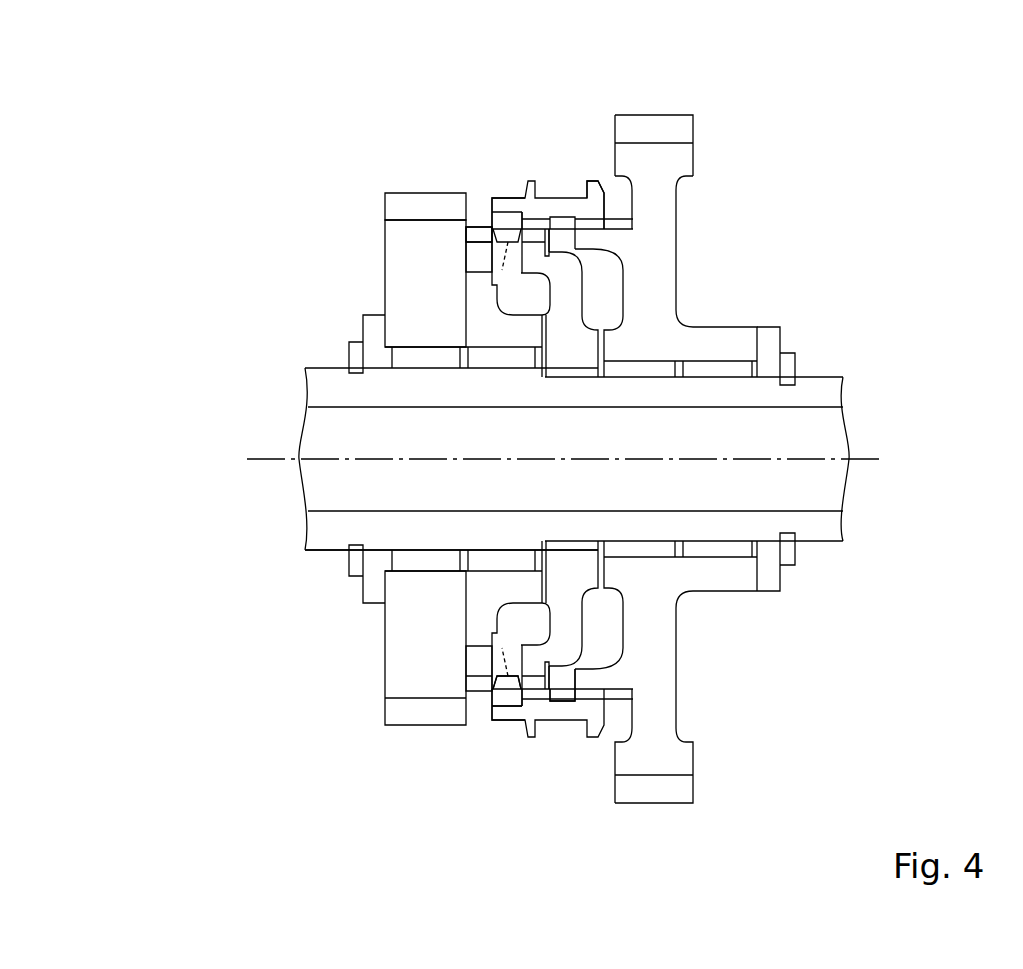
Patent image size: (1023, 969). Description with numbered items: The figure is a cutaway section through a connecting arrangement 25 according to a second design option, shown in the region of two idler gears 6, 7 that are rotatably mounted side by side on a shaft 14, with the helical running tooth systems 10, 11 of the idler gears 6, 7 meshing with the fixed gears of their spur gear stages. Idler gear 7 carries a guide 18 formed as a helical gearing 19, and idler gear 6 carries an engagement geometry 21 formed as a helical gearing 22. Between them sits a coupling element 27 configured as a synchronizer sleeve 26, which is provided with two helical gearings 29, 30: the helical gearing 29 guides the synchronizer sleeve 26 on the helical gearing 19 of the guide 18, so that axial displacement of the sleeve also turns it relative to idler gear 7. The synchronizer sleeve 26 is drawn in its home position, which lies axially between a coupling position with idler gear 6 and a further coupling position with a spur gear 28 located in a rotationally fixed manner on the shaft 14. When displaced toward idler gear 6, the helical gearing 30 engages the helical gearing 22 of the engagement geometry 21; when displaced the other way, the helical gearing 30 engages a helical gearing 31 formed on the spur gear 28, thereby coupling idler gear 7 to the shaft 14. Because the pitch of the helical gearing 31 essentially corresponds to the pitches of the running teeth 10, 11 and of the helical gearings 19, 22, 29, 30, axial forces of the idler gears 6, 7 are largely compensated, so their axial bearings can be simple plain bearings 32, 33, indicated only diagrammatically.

The idler gear 6 is at (398, 270).
The idler gear 7 is at (678, 160).
The running tooth system 10 is at (408, 197).
The running tooth system 11 is at (660, 118).
The shaft 14 is at (320, 394).
The guide 18 is at (579, 239).
The helical gearing 19 is at (562, 218).
The engagement geometry 21 is at (462, 236).
The helical gearing 22 is at (477, 233).
The connecting arrangement 25 is at (532, 178).
The synchronizer sleeve 26 is at (542, 203).
The coupling element 27 is at (500, 190).
The spur gear 28 is at (555, 648).
The helical gearing 29 is at (593, 220).
The helical gearing 30 is at (500, 278).
The helical gearing 31 is at (538, 684).
The plain bearing 32 is at (770, 337).
The plain bearing 33 is at (370, 330).